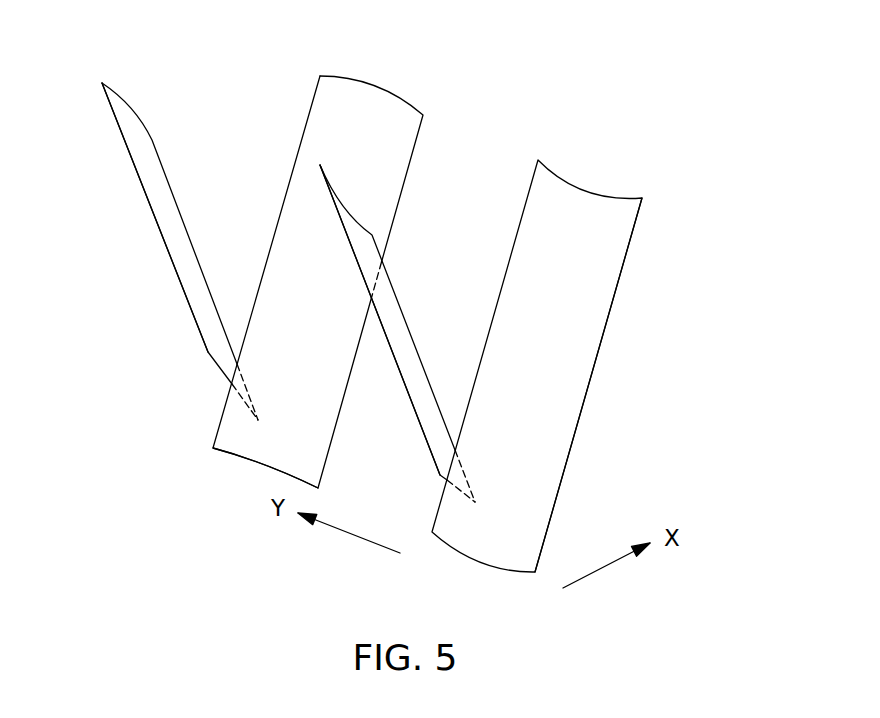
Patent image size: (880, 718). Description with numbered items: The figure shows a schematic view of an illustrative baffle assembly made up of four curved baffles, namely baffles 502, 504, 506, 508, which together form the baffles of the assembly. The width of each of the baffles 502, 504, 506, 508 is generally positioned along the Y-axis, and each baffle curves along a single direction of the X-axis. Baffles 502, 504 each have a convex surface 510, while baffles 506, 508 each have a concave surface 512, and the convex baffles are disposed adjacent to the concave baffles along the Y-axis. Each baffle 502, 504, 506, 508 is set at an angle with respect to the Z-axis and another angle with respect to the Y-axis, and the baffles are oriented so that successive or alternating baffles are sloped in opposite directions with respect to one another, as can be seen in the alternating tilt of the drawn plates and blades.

The baffle 502 is at (537, 317).
The baffle 504 is at (402, 347).
The baffle 506 is at (285, 320).
The baffle 508 is at (177, 232).
The convex surface 510 is at (408, 390).
The concave surface 512 is at (192, 315).